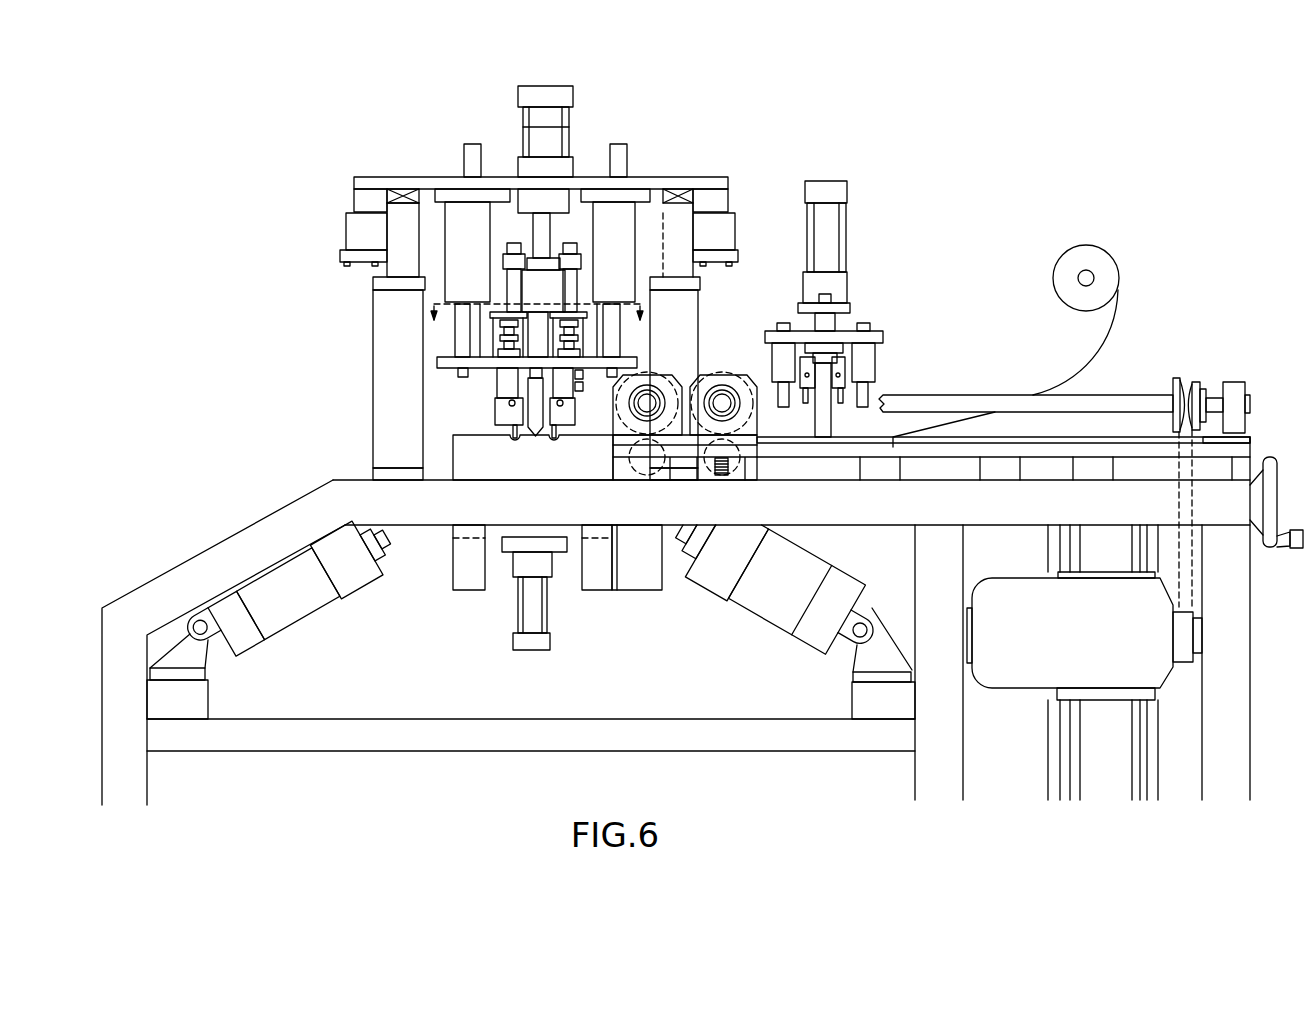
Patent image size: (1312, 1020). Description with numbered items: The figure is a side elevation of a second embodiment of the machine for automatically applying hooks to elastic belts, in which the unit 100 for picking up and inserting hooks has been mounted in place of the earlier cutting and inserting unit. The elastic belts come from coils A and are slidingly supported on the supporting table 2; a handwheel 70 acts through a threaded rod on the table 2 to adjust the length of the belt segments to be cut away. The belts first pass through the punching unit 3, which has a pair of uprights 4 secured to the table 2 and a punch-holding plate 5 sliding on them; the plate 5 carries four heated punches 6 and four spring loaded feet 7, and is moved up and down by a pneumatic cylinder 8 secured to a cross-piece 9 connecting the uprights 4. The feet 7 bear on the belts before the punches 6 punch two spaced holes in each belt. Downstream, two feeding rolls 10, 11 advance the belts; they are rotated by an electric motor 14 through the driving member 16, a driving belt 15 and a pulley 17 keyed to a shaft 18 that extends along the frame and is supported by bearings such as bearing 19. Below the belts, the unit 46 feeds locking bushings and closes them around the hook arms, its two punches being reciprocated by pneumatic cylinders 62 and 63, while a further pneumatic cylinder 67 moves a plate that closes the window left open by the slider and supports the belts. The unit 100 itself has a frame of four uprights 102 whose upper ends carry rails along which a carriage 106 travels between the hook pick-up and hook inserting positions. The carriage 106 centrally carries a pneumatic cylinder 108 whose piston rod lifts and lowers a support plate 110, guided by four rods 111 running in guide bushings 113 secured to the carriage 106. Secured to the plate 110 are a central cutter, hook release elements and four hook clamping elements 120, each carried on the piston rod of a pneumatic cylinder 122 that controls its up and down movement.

The unit 100 is at (648, 153).
The carriage 106 is at (385, 177).
The pneumatic cylinder 108 is at (518, 97).
The rods 111 is at (470, 145).
The bushings 113 is at (450, 229).
The pneumatic cylinders 122 is at (505, 276).
The uprights 102 is at (383, 350).
The support plate 110 is at (446, 369).
The hook clamping elements 120 is at (558, 378).
The unit for feeding locking bushings 46 is at (521, 473).
The feeding roll 11 is at (645, 377).
The feeding roll 10 is at (724, 374).
The supporting table 2 is at (877, 436).
The shaft 18 is at (1017, 395).
The coils A is at (1097, 248).
The pulley 17 is at (1179, 378).
The bearing 19 is at (1233, 382).
The handwheel 70 is at (1270, 548).
The punching unit 3 is at (853, 248).
The pneumatic cylinder 8 is at (832, 184).
The cross-piece 9 is at (852, 306).
The punch-holding plate 5 is at (884, 335).
The spring loaded feet 7 is at (776, 368).
The punches 6 is at (838, 397).
The uprights 4 is at (832, 421).
The pneumatic cylinder 67 is at (528, 640).
The pneumatic cylinder 63 is at (323, 602).
The pneumatic cylinder 62 is at (743, 610).
The electric motor 14 is at (1000, 690).
The driving member 16 is at (1175, 667).
The driving belt 15 is at (1197, 592).